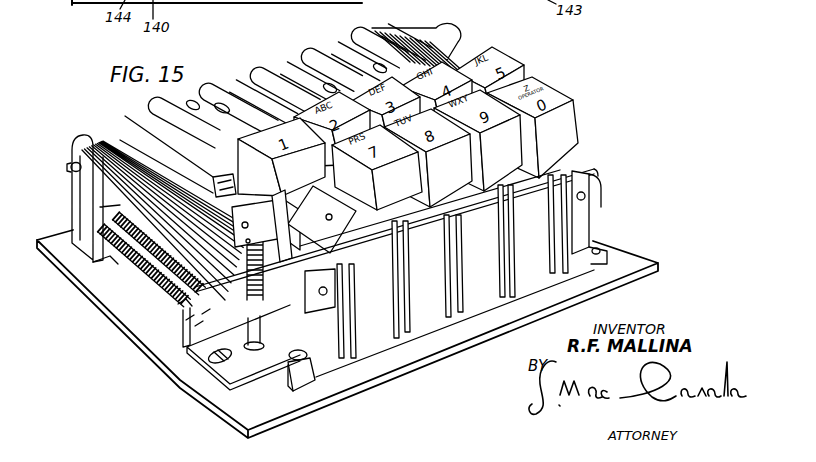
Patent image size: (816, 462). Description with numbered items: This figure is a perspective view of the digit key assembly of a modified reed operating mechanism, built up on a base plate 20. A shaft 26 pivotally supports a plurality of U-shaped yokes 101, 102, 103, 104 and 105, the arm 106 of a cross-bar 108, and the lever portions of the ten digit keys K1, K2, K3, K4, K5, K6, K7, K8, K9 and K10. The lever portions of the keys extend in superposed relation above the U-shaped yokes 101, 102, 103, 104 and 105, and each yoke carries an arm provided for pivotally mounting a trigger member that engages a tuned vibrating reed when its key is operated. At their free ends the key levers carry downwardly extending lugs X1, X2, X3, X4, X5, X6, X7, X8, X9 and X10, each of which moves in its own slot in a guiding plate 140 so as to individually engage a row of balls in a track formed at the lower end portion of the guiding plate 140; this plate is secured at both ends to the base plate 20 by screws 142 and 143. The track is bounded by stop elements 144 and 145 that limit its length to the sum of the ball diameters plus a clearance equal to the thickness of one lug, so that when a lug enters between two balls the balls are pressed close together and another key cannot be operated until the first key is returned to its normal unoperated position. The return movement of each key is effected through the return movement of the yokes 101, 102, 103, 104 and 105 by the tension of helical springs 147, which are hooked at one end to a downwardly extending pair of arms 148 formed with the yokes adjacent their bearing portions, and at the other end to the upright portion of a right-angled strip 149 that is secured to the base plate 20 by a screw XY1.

The base plate 20 is at (435, 347).
The shaft 26 is at (67, 168).
The U-shaped yoke 101 is at (145, 272).
The U-shaped yoke 102 is at (163, 292).
The U-shaped yoke 103 is at (177, 310).
The U-shaped yoke 104 is at (188, 322).
The U-shaped yoke 105 is at (251, 314).
The arm of cross-bar 106 is at (143, 128).
The cross-bar 108 is at (228, 194).
The guiding plate 140 is at (584, 231).
The screw 142 is at (312, 366).
The screw 143 is at (592, 242).
The stop element 144 is at (271, 388).
The stop element 145 is at (600, 251).
The helical spring 147 is at (100, 267).
The pair of arms 148 is at (100, 207).
The right-angled strip 149 is at (190, 334).
The key K1 is at (184, 122).
The key K2 is at (258, 103).
The key K3 is at (302, 82).
The key K4 is at (350, 61).
The key K5 is at (398, 42).
The key K6 is at (191, 95).
The key K7 is at (236, 78).
The key K8 is at (284, 65).
The key K9 is at (335, 47).
The key K10 is at (389, 33).
The lug X1 is at (339, 312).
The lug X2 is at (388, 311).
The lug X3 is at (410, 288).
The lug X4 is at (494, 268).
The lug X5 is at (547, 249).
The lug X6 is at (355, 306).
The lug X7 is at (404, 271).
The lug X8 is at (458, 253).
The lug X9 is at (511, 237).
The lug X10 is at (560, 258).
The screw XY1 is at (233, 358).